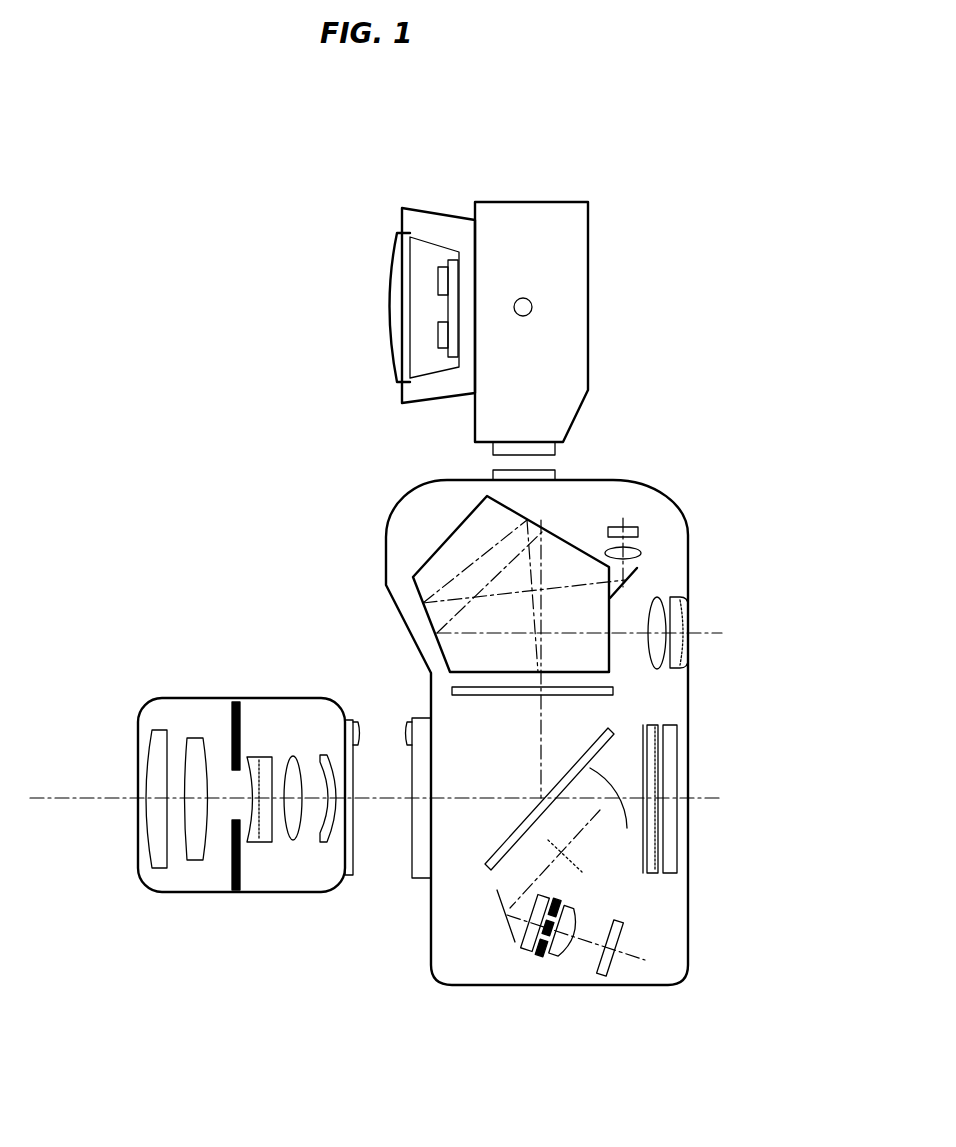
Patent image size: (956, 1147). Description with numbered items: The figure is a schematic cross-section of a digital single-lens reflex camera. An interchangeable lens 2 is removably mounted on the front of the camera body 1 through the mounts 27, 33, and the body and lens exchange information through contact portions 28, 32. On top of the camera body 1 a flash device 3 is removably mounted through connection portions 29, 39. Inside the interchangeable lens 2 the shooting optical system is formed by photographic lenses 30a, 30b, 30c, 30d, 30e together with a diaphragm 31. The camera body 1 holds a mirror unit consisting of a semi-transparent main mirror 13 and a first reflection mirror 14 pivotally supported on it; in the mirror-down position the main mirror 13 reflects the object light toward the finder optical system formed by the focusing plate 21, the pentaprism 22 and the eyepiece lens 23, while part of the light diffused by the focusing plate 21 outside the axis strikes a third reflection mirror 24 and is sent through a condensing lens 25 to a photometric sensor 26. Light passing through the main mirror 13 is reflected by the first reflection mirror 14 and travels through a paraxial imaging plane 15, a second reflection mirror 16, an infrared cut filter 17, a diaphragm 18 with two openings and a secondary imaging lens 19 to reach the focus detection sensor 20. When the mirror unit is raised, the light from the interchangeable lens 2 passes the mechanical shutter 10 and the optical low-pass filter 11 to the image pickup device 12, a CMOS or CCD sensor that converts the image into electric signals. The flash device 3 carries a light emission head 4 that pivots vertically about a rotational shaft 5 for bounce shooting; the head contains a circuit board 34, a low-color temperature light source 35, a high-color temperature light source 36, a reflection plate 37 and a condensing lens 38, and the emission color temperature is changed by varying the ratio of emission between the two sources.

The camera body 1 is at (388, 519).
The interchangeable lens 2 is at (190, 696).
The flash device 3 is at (280, 153).
The light emission head 4 is at (430, 208).
The rotational shaft 5 is at (532, 307).
The mechanical shutter 10 is at (645, 718).
The optical low-pass filter 11 is at (656, 760).
The image pickup device 12 is at (671, 828).
The main mirror 13 is at (590, 750).
The first reflection mirror 14 is at (610, 780).
The paraxial imaging plane 15 is at (575, 865).
The second reflection mirror 16 is at (505, 912).
The infrared cut filter 17 is at (528, 953).
The diaphragm 18 is at (550, 957).
The secondary imaging lens 19 is at (560, 958).
The focus detection sensor 20 is at (622, 933).
The focusing plate 21 is at (492, 697).
The pentaprism 22 is at (440, 572).
The eyepiece lens 23 is at (678, 615).
The third reflection mirror 24 is at (637, 577).
The condensing lens 25 is at (632, 547).
The photometric sensor 26 is at (617, 525).
The mount 27 is at (416, 878).
The contact portion 28 is at (409, 727).
The connection portion 29 is at (493, 474).
The photographic lens 30a is at (153, 837).
The photographic lens 30b is at (199, 848).
The photographic lens 30c is at (258, 843).
The photographic lens 30d is at (293, 840).
The photographic lens 30e is at (326, 844).
The diaphragm 31 is at (240, 716).
The contact portion 32 is at (357, 727).
The mount 33 is at (352, 876).
The circuit board 34 is at (453, 258).
The low-color temperature light source 35 is at (442, 265).
The high-color temperature light source 36 is at (437, 350).
The reflection plate 37 is at (417, 231).
The condensing lens 38 is at (398, 274).
The connection portion 39 is at (548, 447).